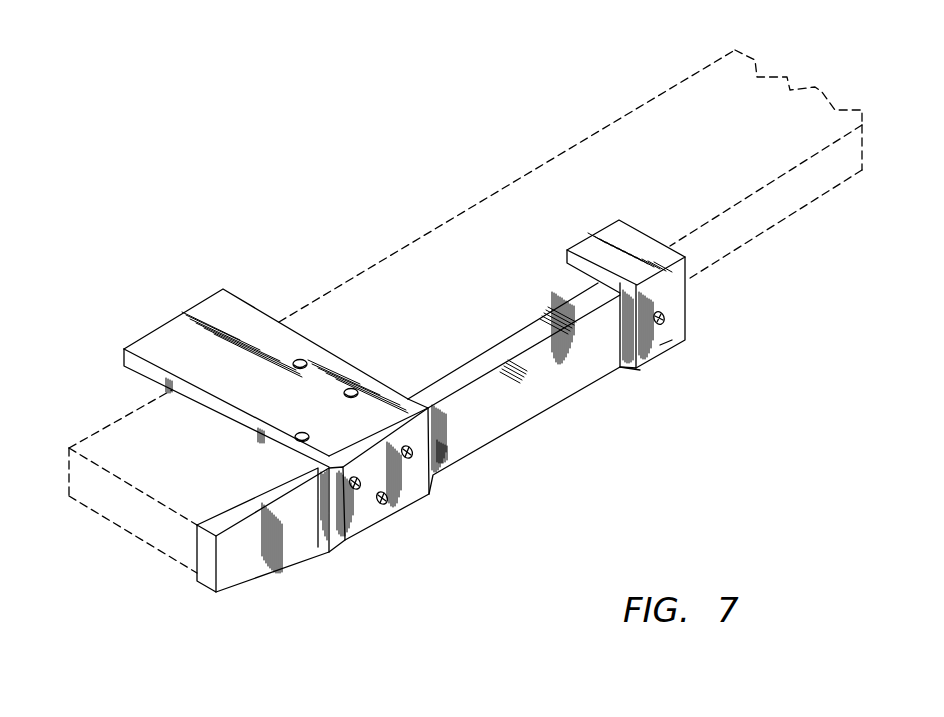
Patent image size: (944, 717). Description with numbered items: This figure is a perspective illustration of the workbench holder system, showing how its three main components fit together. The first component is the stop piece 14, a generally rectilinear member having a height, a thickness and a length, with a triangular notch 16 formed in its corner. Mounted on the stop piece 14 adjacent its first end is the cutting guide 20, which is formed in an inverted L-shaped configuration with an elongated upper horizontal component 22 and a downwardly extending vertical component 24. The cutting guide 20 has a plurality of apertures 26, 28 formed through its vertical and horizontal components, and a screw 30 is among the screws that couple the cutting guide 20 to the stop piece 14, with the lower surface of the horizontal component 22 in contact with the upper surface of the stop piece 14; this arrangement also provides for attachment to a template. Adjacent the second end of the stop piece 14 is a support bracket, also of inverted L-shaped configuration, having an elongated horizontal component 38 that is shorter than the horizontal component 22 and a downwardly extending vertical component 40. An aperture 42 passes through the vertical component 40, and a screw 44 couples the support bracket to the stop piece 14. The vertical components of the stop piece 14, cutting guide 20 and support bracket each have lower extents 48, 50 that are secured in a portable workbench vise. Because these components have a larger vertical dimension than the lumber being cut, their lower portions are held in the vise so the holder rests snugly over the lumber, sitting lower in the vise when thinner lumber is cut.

The stop piece 14 is at (473, 435).
The triangular notch 16 is at (216, 592).
The cutting guide 20 is at (120, 352).
The elongated upper horizontal component 22 is at (156, 328).
The downwardly extending vertical component 24 is at (347, 536).
The aperture 26 is at (407, 458).
The aperture 28 is at (352, 388).
The screw 30 is at (356, 488).
The elongated horizontal component 38 is at (618, 223).
The downwardly extending vertical component 40 is at (665, 347).
The aperture 42 is at (665, 318).
The screw 44 is at (665, 322).
The lower extent 48 is at (428, 490).
The lower extent 50 is at (640, 368).